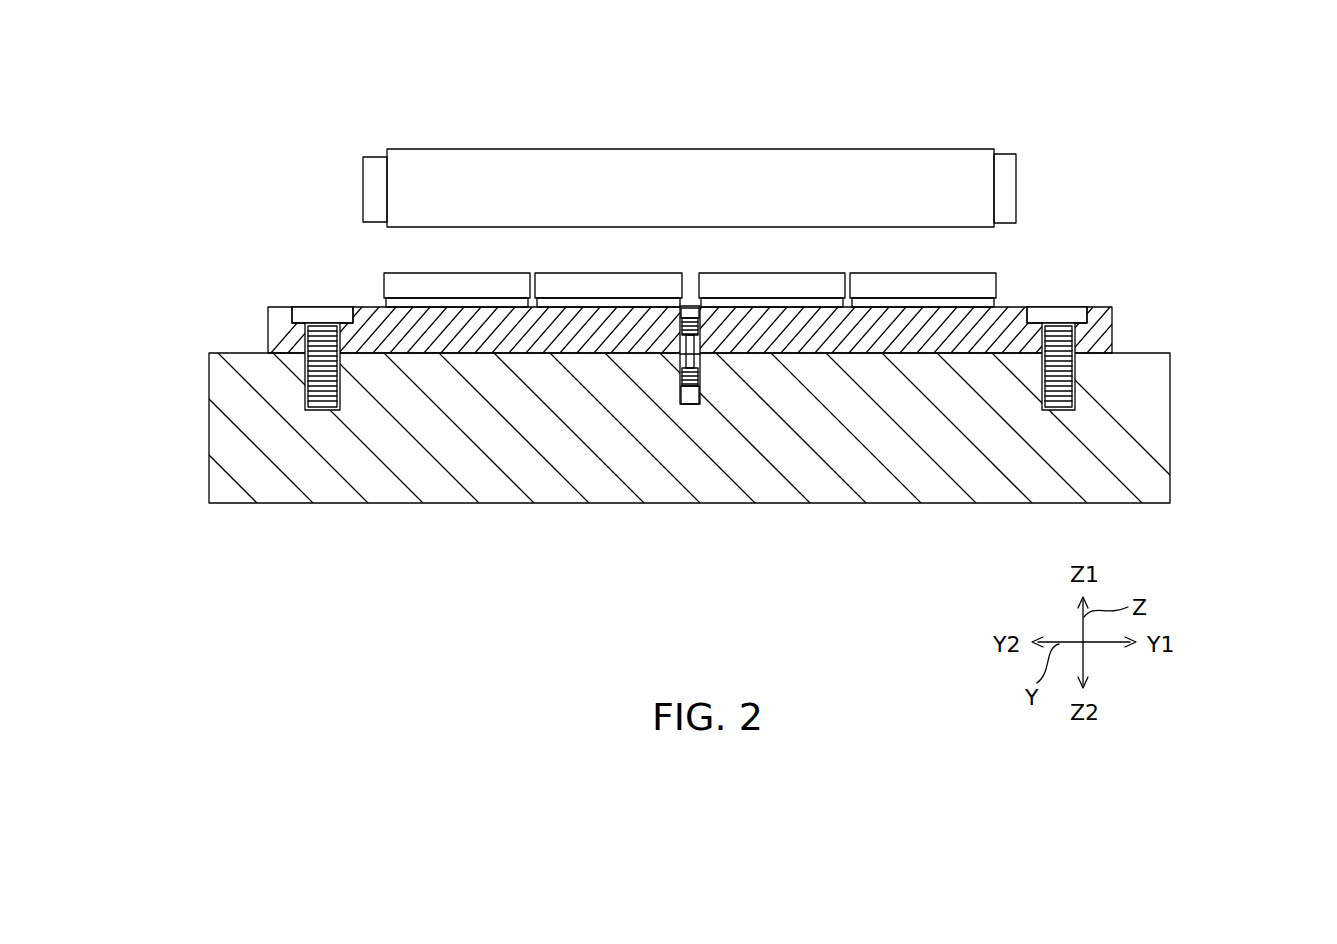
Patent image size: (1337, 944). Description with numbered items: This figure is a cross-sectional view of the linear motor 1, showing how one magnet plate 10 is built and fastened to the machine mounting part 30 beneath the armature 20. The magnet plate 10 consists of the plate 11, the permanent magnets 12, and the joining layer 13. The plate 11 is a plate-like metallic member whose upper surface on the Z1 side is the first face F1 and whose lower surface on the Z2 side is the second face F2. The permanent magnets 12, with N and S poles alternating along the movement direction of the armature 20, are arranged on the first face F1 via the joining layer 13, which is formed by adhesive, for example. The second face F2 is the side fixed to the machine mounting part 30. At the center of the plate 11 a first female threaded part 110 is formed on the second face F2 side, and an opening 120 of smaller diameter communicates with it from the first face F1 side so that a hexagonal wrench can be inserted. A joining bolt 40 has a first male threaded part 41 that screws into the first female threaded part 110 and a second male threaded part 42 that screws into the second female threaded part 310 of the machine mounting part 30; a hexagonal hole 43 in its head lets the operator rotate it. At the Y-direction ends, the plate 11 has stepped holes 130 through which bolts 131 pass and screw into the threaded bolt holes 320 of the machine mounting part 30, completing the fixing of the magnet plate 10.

The linear motor 1 is at (1262, 155).
The magnet plate 10 is at (763, 317).
The plate 11 is at (1110, 342).
The permanent magnet 12 is at (982, 274).
The joining layer 13 is at (997, 304).
The armature 20 is at (943, 149).
The machine mounting part 30 is at (1157, 433).
The joining bolt 40 is at (690, 399).
The first male threaded part 41 is at (700, 326).
The second male threaded part 42 is at (678, 385).
The hexagonal hole 43 is at (676, 308).
The first female threaded part 110 is at (696, 338).
The opening 120 is at (690, 306).
The stepped hole 130 is at (1094, 318).
The bolt 131 is at (1060, 308).
The second female threaded part 310 is at (692, 395).
The bolt hole 320 is at (1070, 358).
The first face F1 is at (370, 307).
The second face F2 is at (370, 353).